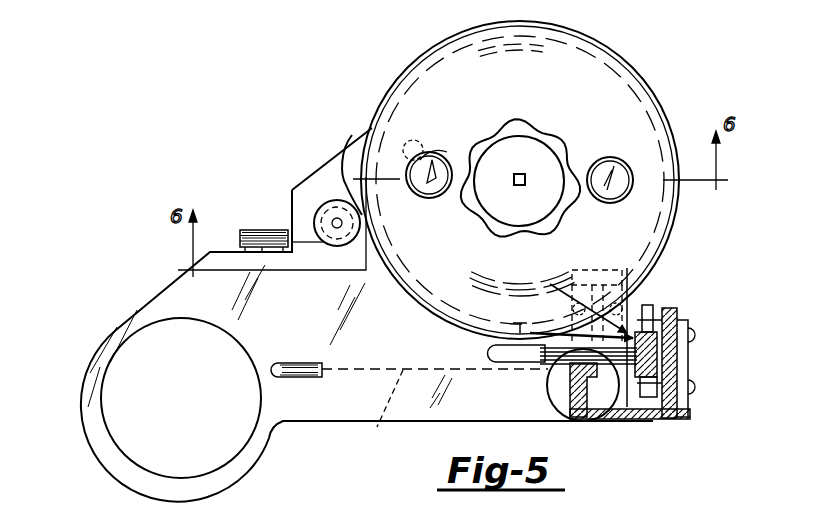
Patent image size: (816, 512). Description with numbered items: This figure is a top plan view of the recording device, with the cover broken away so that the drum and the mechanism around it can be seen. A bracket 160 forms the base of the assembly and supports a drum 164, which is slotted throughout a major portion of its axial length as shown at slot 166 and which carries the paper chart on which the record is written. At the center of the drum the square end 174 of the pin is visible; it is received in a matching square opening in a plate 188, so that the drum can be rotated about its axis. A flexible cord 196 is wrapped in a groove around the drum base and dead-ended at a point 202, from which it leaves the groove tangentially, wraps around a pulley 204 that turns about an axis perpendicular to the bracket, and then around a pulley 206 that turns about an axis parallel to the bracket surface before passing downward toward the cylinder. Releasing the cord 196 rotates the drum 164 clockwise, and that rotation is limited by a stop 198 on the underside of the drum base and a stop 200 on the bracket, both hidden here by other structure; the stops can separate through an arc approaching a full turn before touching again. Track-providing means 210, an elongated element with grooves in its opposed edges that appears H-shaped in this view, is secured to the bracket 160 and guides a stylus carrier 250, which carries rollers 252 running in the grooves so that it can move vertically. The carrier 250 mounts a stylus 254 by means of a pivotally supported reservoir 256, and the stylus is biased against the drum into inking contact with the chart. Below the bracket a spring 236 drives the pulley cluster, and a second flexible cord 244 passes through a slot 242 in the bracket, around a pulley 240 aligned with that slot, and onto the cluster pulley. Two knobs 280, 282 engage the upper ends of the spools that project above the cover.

The bracket 160 is at (97, 342).
The drum 164 is at (627, 65).
The slot 166 is at (515, 336).
The square end 174 is at (525, 172).
The plate 188 is at (517, 147).
The flexible cord 196 is at (357, 142).
The stop 198 is at (420, 142).
The stop 200 is at (448, 147).
The dead-end point 202 is at (390, 95).
The pulley 204 is at (322, 205).
The pulley 206 is at (250, 230).
The track-providing means 210 is at (570, 299).
The spring 236 is at (595, 282).
The pulley 240 is at (310, 378).
The slot 242 is at (272, 363).
The flexible cord 244 is at (381, 412).
The stylus carrier 250 is at (693, 364).
The rollers 252 is at (645, 328).
The stylus 254 is at (530, 333).
The reservoir 256 is at (550, 393).
The knob 280 is at (428, 200).
The knob 282 is at (632, 192).